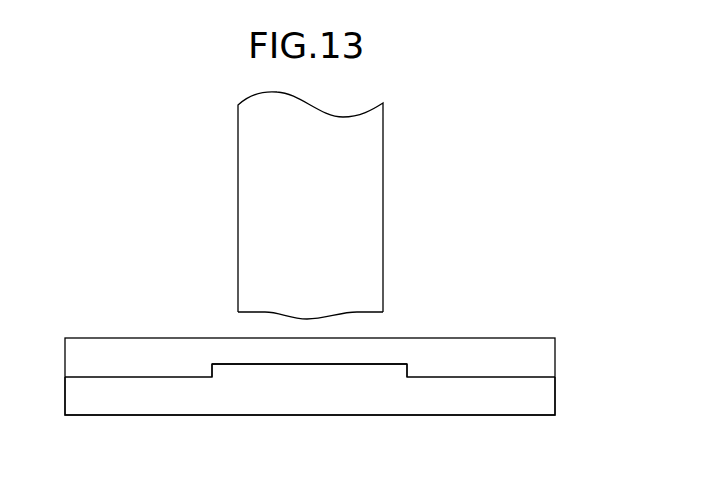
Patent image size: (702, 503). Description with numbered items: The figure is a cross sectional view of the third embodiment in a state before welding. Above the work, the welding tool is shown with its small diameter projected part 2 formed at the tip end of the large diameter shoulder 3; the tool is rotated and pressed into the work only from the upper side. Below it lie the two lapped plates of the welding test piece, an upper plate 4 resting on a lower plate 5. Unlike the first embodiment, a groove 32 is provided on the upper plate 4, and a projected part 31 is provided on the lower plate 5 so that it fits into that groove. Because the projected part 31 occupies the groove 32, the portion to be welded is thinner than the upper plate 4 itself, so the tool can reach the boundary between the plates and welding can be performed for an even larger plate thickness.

The projected part 2 is at (287, 318).
The shoulder 3 is at (238, 173).
The upper plate 4 is at (97, 338).
The lower plate 5 is at (95, 413).
The projected part 31 is at (355, 374).
The groove 32 is at (388, 350).